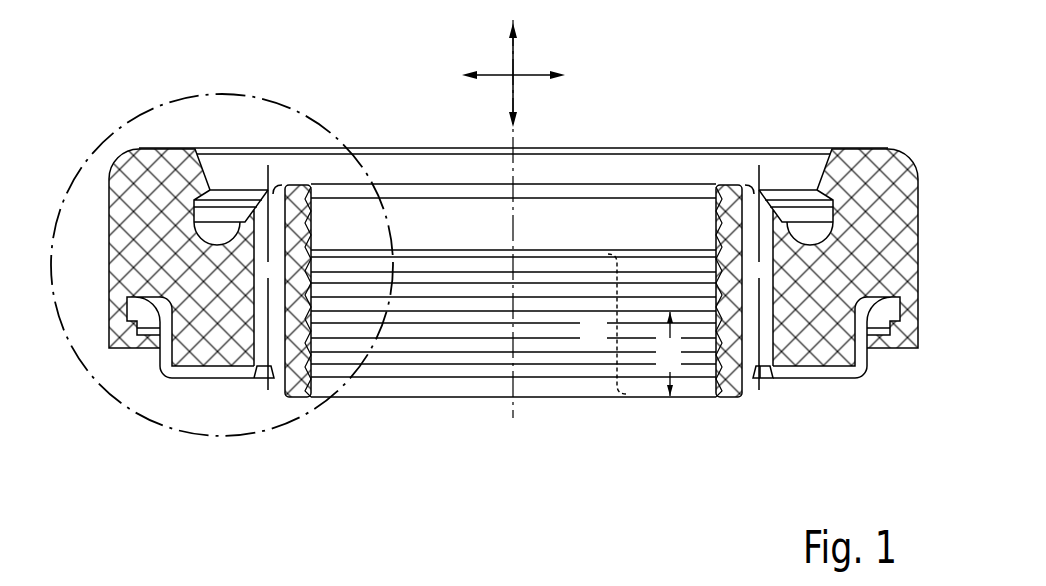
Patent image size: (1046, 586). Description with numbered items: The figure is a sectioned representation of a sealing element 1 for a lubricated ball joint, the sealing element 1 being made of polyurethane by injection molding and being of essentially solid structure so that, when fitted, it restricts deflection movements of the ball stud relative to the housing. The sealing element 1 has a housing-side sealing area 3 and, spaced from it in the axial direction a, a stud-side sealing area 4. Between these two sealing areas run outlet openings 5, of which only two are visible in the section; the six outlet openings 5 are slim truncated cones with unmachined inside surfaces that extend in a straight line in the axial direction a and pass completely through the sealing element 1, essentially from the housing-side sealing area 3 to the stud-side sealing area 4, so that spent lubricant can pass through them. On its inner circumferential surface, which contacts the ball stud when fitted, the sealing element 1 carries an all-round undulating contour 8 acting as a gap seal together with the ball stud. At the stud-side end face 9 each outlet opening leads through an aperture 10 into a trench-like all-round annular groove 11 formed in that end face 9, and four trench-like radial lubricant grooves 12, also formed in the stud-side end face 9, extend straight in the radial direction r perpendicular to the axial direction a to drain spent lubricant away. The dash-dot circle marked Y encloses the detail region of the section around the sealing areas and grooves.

The sealing element 1 is at (650, 104).
The housing-side sealing area 3 is at (799, 168).
The stud-side sealing area 4 is at (668, 354).
The outlet openings 5 is at (748, 172).
The undulating contour 8 is at (617, 323).
The stud-side end face 9 is at (458, 414).
The aperture 10 is at (751, 390).
The annular groove 11 is at (770, 390).
The radial lubricant grooves 12 is at (818, 373).
The detail region Y is at (162, 436).
The axial direction a is at (512, 57).
The radial direction r is at (537, 75).